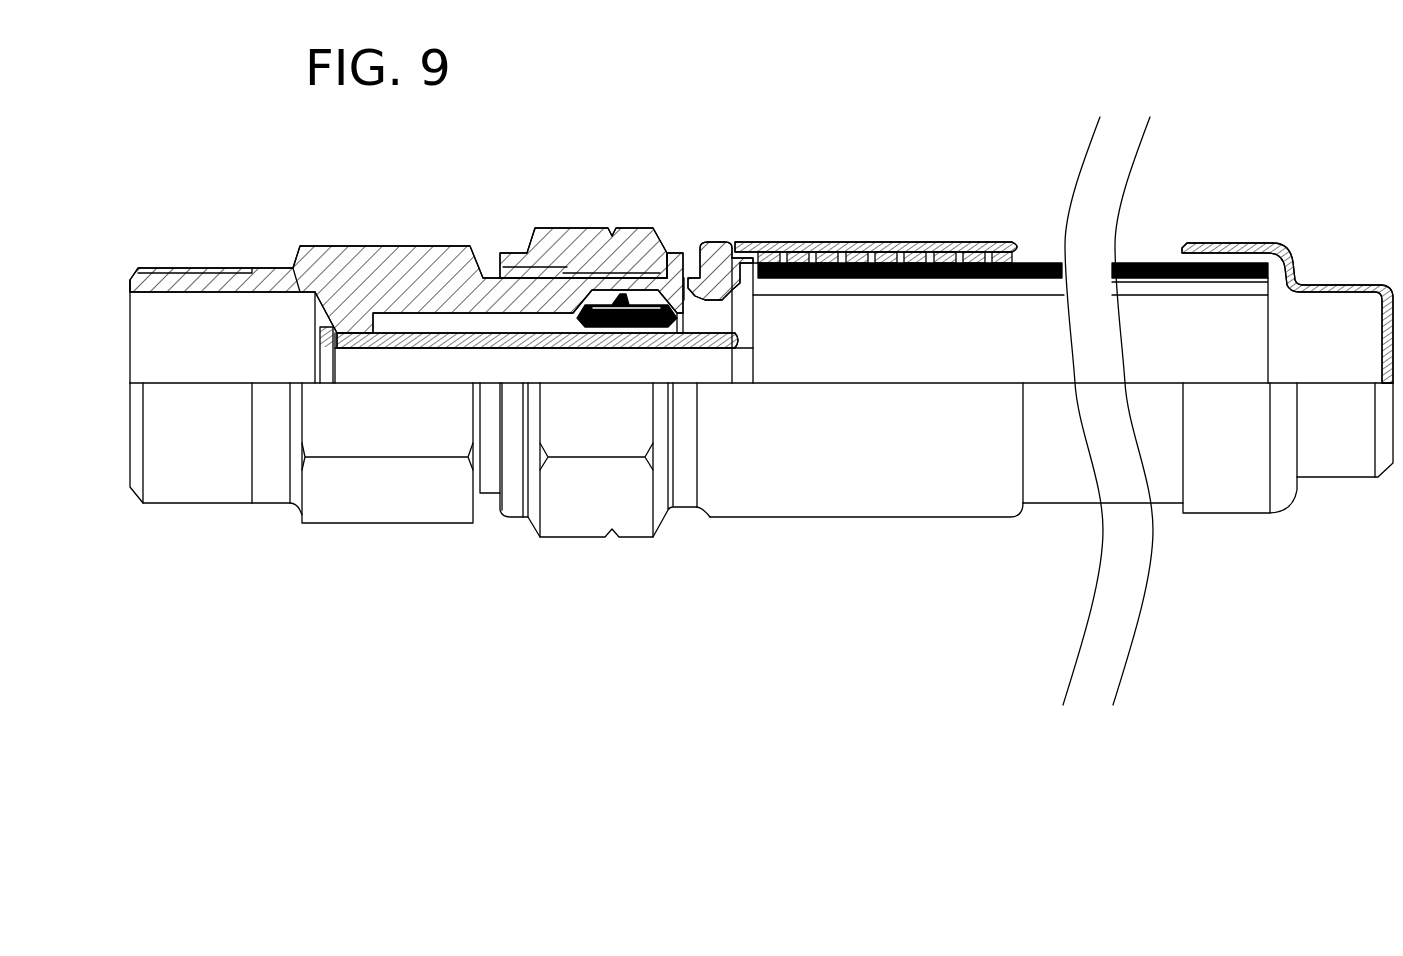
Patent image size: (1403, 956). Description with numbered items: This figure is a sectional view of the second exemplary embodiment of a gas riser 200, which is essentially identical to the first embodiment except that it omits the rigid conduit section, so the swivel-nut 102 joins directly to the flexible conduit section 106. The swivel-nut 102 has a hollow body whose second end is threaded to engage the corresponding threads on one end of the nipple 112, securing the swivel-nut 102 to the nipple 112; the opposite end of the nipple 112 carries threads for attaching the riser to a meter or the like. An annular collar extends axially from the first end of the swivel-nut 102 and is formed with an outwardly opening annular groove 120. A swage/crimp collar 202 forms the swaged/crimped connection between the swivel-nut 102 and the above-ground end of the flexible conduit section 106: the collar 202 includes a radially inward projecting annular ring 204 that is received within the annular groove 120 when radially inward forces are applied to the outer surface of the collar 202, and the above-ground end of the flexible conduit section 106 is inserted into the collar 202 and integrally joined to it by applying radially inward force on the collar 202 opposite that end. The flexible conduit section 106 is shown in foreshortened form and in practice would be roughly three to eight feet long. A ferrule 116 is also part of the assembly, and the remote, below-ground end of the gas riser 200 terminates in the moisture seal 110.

The swivel-nut 102 is at (584, 520).
The flexible conduit section 106 is at (1062, 483).
The moisture seal 110 is at (1237, 487).
The nipple 112 is at (357, 497).
The ferrule 116 is at (567, 327).
The annular groove 120 is at (664, 218).
The gas riser 200 is at (1010, 90).
The swage/crimp collar 202 is at (792, 505).
The annular ring 204 is at (689, 240).